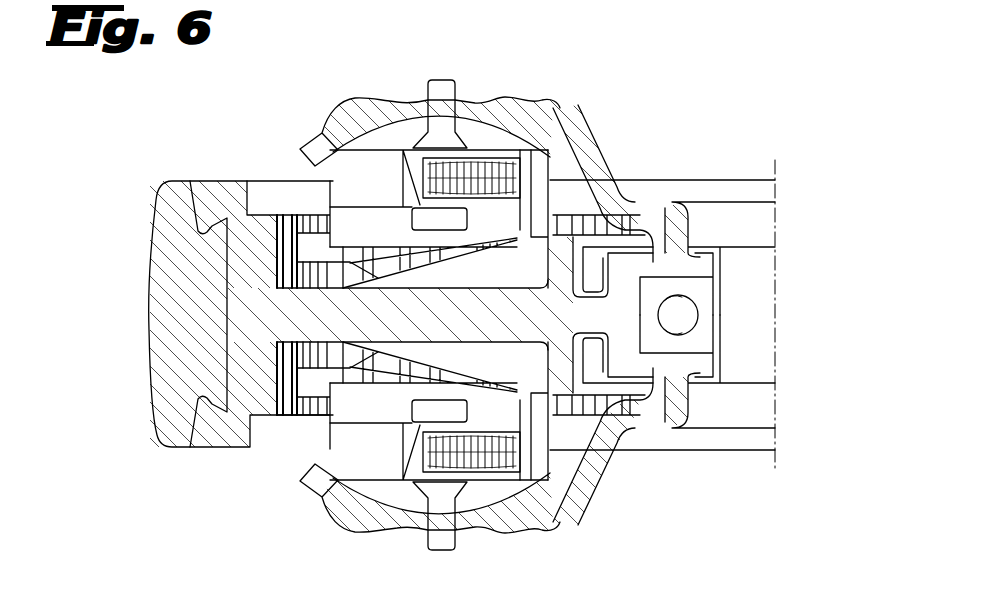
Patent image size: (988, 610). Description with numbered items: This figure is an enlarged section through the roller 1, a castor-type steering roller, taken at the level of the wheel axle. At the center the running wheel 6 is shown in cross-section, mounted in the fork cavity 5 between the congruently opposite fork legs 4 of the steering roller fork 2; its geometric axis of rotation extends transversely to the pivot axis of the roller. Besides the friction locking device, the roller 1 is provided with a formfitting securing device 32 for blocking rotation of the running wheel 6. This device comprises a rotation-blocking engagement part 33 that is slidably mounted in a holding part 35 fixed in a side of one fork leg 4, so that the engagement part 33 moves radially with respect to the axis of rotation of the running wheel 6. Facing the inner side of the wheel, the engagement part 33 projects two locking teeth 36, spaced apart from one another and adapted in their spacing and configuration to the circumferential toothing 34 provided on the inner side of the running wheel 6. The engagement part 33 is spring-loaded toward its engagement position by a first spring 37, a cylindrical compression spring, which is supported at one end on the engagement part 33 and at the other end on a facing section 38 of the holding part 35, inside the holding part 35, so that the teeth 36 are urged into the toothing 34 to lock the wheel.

The roller 1 is at (797, 92).
The steering roller fork 2 is at (498, 94).
The fork legs 4 is at (538, 117).
The fork cavity 5 is at (608, 427).
The running wheel 6 is at (185, 332).
The formfitting securing device 32 is at (400, 178).
The rotation-blocking engagement part 33 is at (405, 178).
The circumferential toothing 34 is at (275, 228).
The holding part 35 is at (543, 190).
The locking teeth 36 is at (345, 221).
The first spring 37 is at (522, 163).
The section of holding part 38 is at (630, 198).